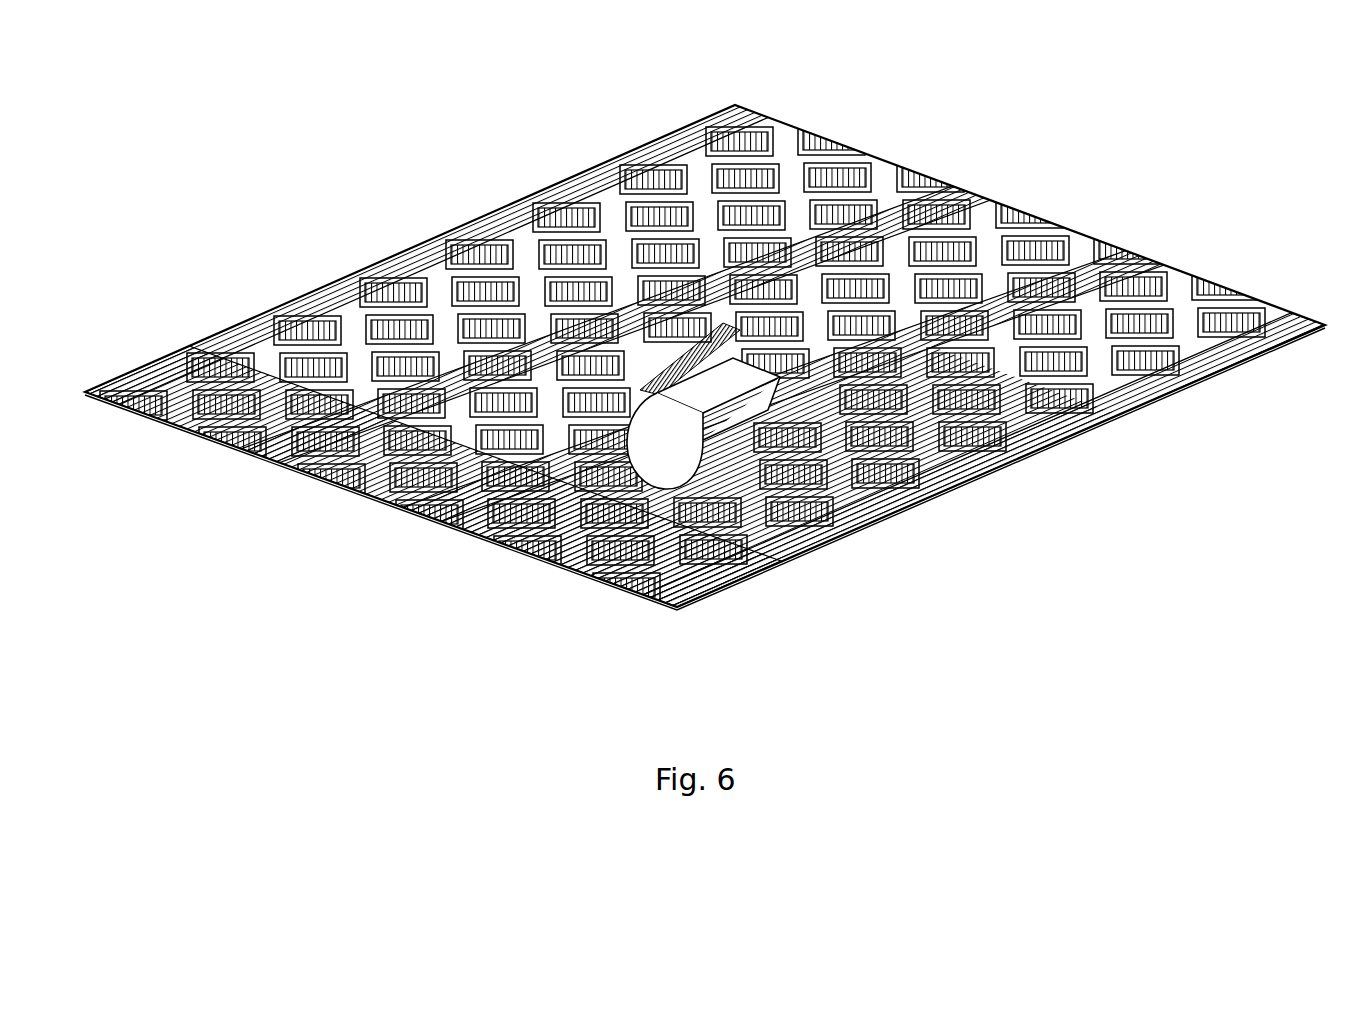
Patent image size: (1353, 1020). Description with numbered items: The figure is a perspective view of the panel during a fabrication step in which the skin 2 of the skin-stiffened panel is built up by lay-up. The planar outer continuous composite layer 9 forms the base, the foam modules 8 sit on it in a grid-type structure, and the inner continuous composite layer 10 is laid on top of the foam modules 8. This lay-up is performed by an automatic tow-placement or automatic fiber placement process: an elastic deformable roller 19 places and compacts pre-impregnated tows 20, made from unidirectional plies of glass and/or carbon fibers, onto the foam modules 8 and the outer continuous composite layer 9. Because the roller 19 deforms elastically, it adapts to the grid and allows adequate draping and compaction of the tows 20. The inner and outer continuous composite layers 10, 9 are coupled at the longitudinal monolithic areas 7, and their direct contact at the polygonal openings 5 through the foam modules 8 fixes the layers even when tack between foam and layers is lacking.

The skin 2 is at (357, 238).
The polygonal openings 5 is at (607, 586).
The longitudinal monolithic areas 7 is at (500, 521).
The foam modules 8 is at (981, 222).
The outer continuous composite layer 9 is at (515, 200).
The inner continuous composite layer 10 is at (190, 346).
The elastic deformable roller 19 is at (722, 458).
The pre-impregnated tows 20 is at (796, 290).